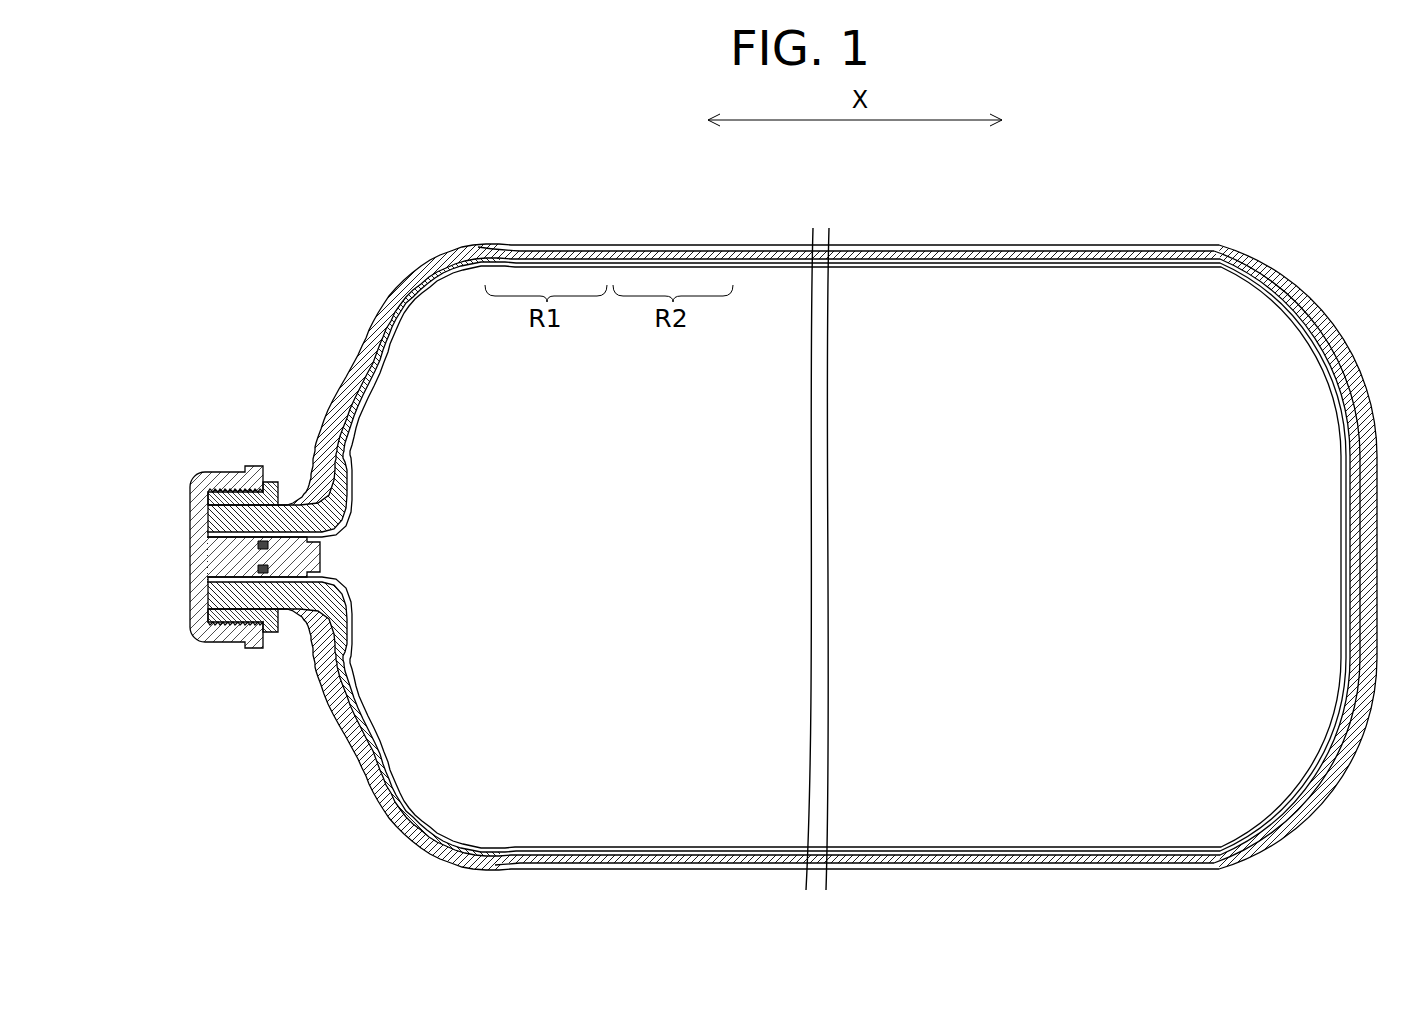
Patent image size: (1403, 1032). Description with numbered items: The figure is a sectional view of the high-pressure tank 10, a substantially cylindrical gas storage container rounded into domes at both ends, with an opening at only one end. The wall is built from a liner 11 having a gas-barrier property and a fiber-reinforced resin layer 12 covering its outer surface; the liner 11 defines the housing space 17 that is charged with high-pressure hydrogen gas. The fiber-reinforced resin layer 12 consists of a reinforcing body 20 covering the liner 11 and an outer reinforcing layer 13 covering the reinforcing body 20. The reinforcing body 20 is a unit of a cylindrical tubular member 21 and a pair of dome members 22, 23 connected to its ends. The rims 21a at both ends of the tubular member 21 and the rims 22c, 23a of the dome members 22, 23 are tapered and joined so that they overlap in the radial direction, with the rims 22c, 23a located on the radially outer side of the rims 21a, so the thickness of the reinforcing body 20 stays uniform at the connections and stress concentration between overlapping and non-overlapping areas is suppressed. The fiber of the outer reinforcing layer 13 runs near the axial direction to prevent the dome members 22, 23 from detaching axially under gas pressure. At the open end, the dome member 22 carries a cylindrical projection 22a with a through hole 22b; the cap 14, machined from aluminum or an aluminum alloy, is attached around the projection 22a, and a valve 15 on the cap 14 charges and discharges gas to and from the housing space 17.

The high-pressure tank 10 is at (1286, 184).
The liner 11 is at (768, 268).
The fiber-reinforced resin layer 12 is at (927, 503).
The outer reinforcing layer 13 is at (897, 245).
The cap 14 is at (273, 478).
The valve 15 is at (227, 480).
The housing space 17 is at (978, 805).
The reinforcing body 20 is at (875, 190).
The tubular member 21 is at (867, 263).
The rims of the tubular member 21a is at (563, 252).
The dome member 22 is at (352, 432).
The projection 22a is at (238, 518).
The through hole 22b is at (363, 561).
The rim of the dome member 22c is at (520, 250).
The dome member 23 is at (1345, 493).
The rim of the dome member 23a is at (1180, 247).